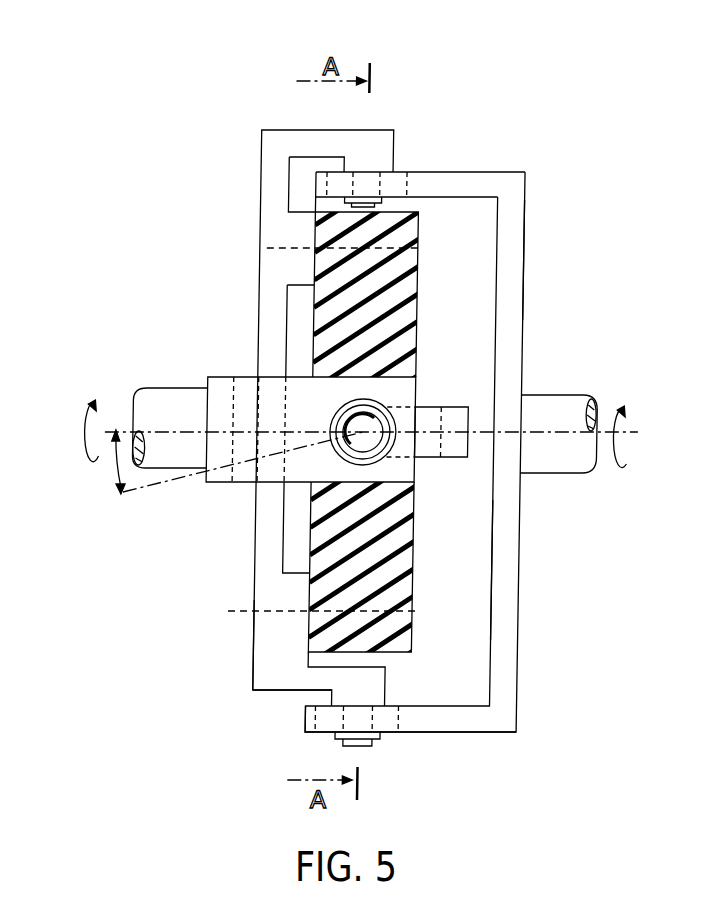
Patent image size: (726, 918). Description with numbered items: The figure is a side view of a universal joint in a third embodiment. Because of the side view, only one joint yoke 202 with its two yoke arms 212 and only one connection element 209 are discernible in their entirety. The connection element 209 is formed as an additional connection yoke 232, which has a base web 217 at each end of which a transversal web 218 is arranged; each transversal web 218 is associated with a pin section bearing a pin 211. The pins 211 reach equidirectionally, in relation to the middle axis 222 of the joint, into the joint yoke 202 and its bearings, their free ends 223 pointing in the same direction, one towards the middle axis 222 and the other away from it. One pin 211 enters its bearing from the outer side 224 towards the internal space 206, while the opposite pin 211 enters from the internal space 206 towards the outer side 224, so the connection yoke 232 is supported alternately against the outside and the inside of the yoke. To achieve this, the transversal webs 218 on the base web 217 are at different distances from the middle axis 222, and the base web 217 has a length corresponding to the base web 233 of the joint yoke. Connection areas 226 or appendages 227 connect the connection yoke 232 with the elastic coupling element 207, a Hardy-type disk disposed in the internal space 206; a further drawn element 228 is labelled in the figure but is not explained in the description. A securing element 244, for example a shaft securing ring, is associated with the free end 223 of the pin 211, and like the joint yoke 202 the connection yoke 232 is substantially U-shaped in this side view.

The joint yoke 202 is at (509, 255).
The internal space 206 is at (478, 697).
The elastic coupling element 207 is at (340, 275).
The connection element 209 is at (268, 320).
The pin 211 is at (365, 185).
The yoke arm 212 is at (461, 177).
The base web 217 is at (272, 552).
The transversal web 218 is at (300, 142).
The middle axis of the joint 222 is at (532, 432).
The free end of the pin 223 is at (365, 746).
The outer side 224 is at (445, 170).
The connection area 226 is at (295, 622).
The appendage 227 is at (283, 708).
The axis line 228 is at (247, 611).
The connection yoke 232 is at (254, 448).
The base web of the joint yoke 233 is at (516, 553).
The securing element 244 is at (343, 739).